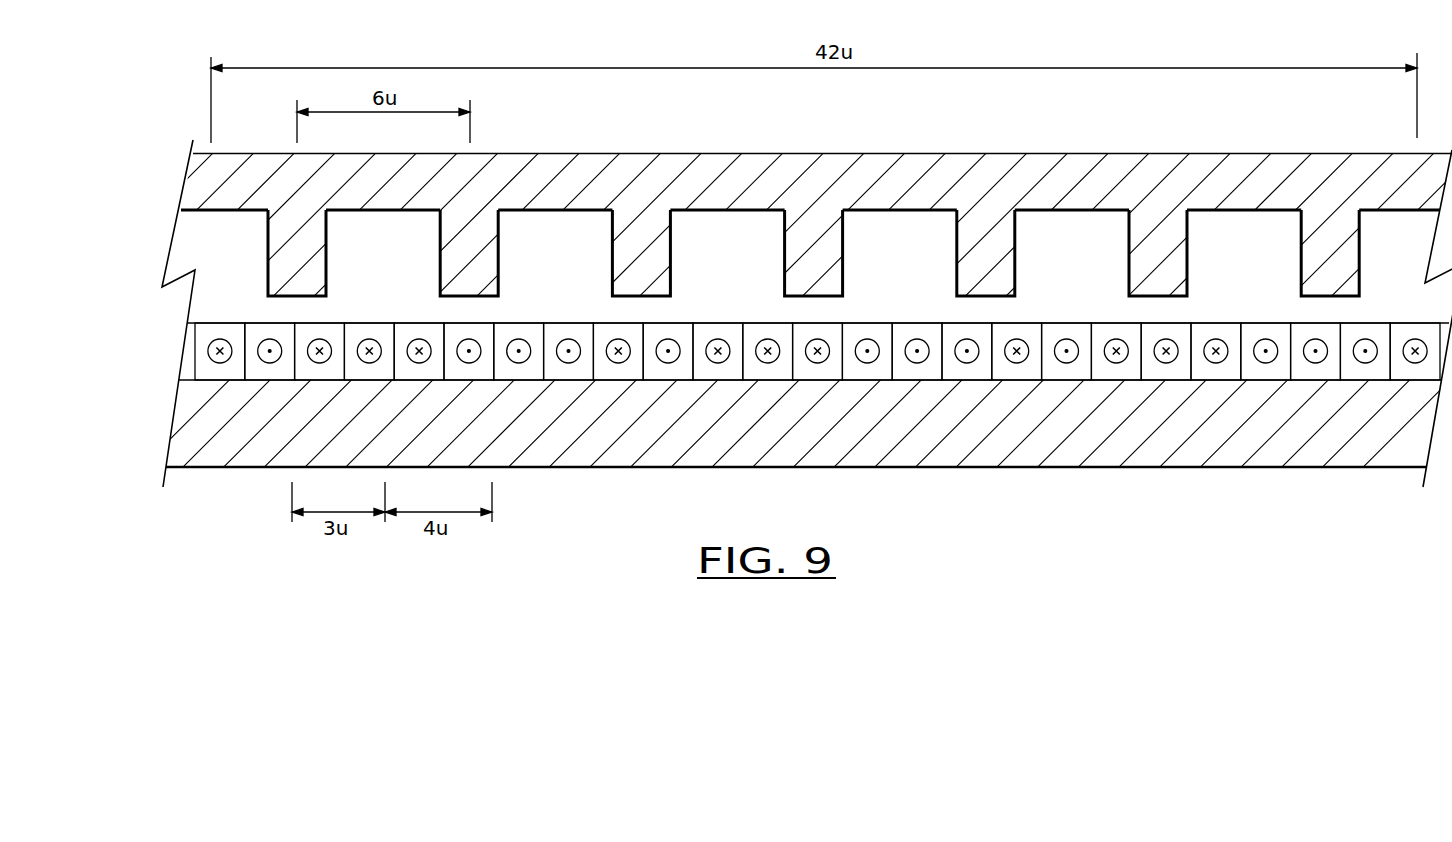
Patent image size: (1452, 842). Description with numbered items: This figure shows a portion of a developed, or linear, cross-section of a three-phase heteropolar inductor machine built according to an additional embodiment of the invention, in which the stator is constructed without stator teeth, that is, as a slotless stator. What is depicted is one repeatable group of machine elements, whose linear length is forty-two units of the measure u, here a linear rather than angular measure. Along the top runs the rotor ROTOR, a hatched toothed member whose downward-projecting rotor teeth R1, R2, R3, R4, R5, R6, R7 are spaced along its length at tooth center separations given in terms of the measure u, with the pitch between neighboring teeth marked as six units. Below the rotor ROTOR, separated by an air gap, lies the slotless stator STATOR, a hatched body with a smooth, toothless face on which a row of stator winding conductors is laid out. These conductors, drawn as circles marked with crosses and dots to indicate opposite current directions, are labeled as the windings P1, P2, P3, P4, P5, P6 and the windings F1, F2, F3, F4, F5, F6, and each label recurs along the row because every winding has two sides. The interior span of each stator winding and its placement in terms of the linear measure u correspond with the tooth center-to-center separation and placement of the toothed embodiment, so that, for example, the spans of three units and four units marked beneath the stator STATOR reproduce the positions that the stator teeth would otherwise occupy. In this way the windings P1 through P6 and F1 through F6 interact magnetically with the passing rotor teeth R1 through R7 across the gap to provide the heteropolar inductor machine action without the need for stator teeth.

The rotor ROTOR is at (957, 165).
The stator STATOR is at (1018, 458).
The rotor tooth R1 is at (320, 251).
The rotor tooth R2 is at (492, 251).
The rotor tooth R3 is at (664, 251).
The rotor tooth R4 is at (837, 251).
The rotor tooth R5 is at (1009, 251).
The rotor tooth R6 is at (1181, 251).
The rotor tooth R7 is at (1353, 251).
The stator winding P1 is at (254, 340).
The stator winding P2 is at (453, 340).
The stator winding P3 is at (652, 340).
The stator winding P4 is at (851, 340).
The stator winding P5 is at (1051, 340).
The stator winding P6 is at (1250, 340).
The stator winding F1 is at (298, 340).
The stator winding F2 is at (347, 340).
The stator winding F3 is at (547, 340).
The stator winding F4 is at (746, 340).
The stator winding F5 is at (945, 340).
The stator winding F6 is at (1144, 340).